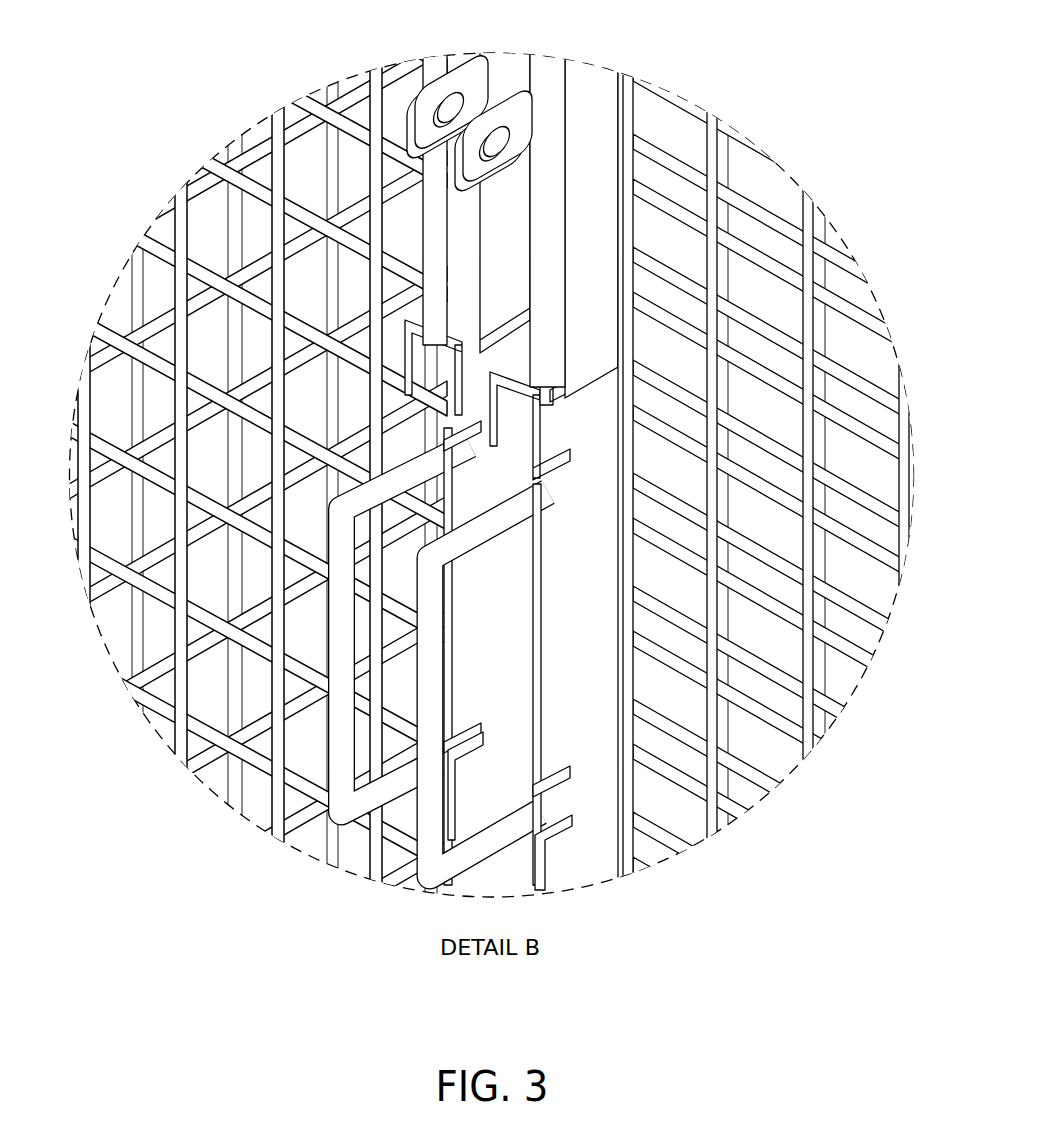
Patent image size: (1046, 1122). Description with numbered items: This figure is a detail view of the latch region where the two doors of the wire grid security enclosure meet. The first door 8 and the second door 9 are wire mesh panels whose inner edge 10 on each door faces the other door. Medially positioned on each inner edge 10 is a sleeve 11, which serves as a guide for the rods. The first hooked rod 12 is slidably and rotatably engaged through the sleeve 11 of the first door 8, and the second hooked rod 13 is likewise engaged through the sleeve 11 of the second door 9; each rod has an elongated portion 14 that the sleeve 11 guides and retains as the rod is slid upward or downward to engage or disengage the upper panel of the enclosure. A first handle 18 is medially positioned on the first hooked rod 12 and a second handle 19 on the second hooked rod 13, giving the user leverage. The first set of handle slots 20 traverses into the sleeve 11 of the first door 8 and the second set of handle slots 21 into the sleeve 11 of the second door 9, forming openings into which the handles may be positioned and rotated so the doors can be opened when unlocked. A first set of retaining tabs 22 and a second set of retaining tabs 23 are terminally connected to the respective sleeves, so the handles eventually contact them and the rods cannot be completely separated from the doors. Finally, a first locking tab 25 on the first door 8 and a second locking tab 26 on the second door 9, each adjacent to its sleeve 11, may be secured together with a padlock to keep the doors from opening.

The first door 8 is at (100, 328).
The second door 9 is at (798, 738).
The inner edge 10 is at (503, 70).
The sleeve 11 is at (406, 440).
The first hooked rod 12 is at (472, 258).
The second hooked rod 13 is at (556, 343).
The elongated portion 14 is at (560, 125).
The first handle 18 is at (335, 640).
The second handle 19 is at (432, 636).
The first set of handle slots 20 is at (457, 432).
The second set of handle slots 21 is at (549, 488).
The first set of retaining tabs 22 is at (410, 320).
The second set of retaining tabs 23 is at (548, 398).
The first locking tab 25 is at (468, 62).
The second locking tab 26 is at (522, 120).